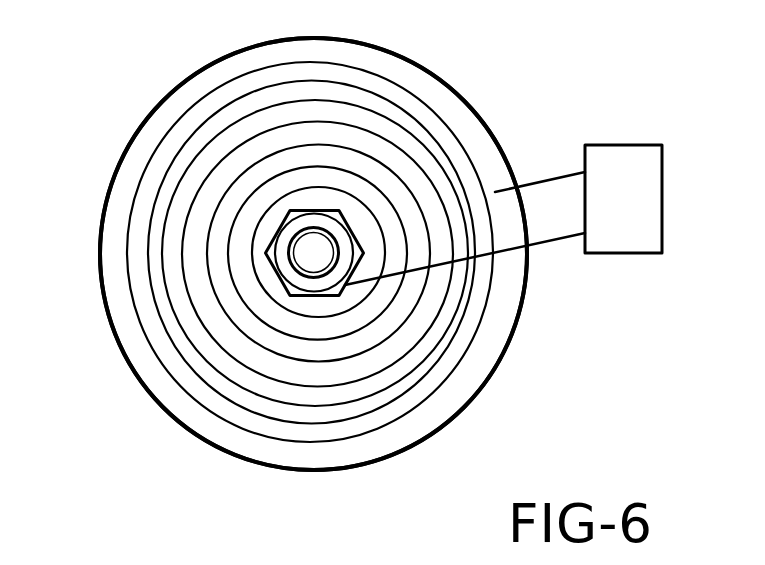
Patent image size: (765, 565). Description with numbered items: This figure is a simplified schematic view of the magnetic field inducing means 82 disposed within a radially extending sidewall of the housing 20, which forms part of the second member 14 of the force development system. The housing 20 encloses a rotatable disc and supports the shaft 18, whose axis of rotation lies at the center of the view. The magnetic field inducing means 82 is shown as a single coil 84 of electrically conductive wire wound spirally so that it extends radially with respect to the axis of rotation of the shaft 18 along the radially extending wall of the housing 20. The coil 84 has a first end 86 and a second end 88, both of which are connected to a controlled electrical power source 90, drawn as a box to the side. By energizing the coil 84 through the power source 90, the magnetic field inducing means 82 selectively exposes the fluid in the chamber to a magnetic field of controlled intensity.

The second member 14 is at (105, 201).
The shaft 18 is at (311, 247).
The housing 20 is at (507, 350).
The magnetic field inducing means 82 is at (361, 452).
The coil 84 is at (447, 380).
The first end 86 is at (532, 178).
The second end 88 is at (545, 244).
The controlled electrical power source 90 is at (613, 148).